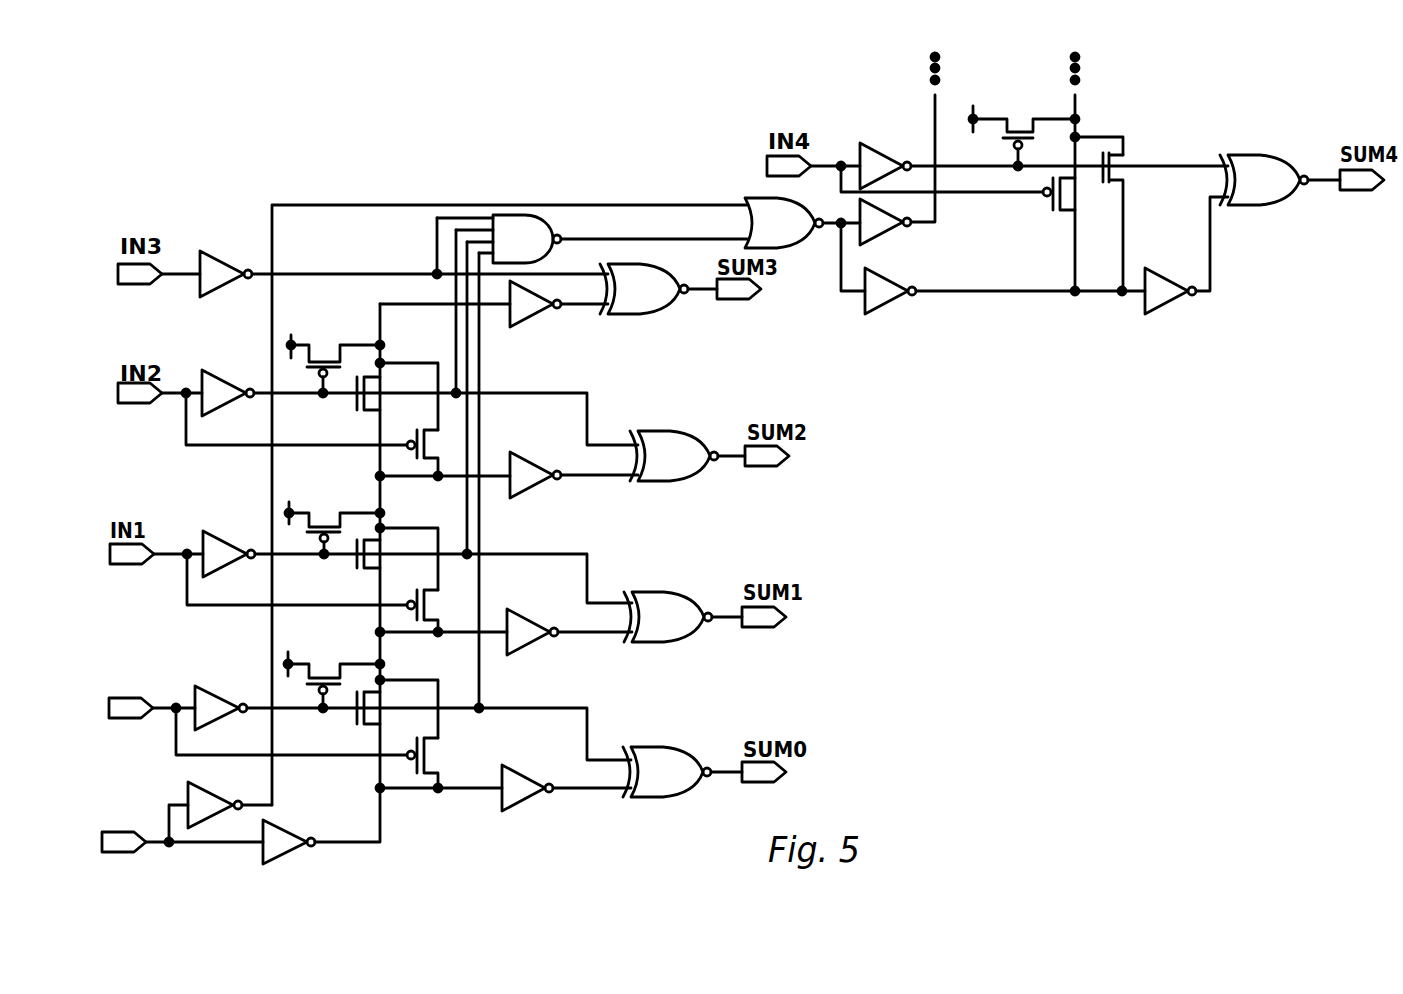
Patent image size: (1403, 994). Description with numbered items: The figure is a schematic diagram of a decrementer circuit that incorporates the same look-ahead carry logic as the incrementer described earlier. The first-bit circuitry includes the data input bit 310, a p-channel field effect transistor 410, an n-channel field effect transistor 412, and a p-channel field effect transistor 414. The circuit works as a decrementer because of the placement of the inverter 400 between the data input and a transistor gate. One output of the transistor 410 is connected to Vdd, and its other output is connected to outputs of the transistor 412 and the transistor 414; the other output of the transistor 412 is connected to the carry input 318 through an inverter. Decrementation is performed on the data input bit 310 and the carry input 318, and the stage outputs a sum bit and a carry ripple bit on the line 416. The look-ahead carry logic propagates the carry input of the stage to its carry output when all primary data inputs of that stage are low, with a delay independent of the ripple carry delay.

The data input bit 310 is at (109, 707).
The carry input 318 is at (120, 852).
The inverter 400 is at (215, 697).
The p-channel field effect transistor 410 is at (332, 668).
The n-channel field effect transistor 412 is at (355, 732).
The p-channel field effect transistor 414 is at (432, 757).
The carry ripple line 416 is at (382, 647).